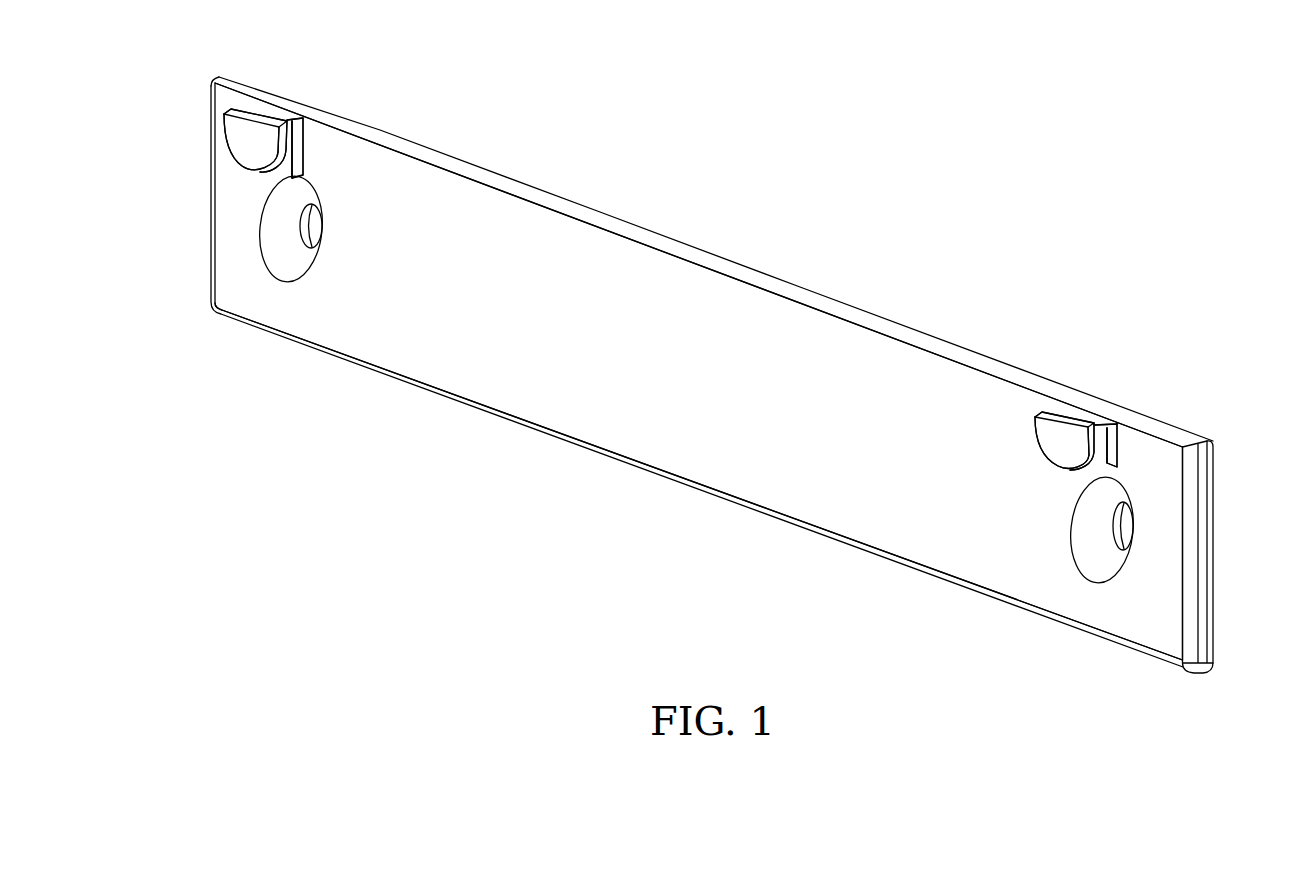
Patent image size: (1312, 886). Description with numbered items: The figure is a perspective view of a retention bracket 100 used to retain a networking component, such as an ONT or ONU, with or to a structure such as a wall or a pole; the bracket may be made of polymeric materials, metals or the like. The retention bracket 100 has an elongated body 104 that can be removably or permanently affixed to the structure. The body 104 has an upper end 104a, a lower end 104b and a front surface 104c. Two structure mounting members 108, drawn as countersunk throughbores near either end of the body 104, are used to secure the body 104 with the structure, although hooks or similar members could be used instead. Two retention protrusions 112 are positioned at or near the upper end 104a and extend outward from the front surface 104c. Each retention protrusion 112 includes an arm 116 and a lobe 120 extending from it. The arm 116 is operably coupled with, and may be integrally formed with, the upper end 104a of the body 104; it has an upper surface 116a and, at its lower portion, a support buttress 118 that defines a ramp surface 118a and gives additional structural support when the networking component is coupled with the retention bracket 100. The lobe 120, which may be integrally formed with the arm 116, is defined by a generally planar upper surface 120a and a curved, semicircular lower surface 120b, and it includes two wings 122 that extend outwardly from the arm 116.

The retention bracket 100 is at (612, 222).
The body 104 is at (513, 210).
The upper end 104a is at (204, 80).
The lower end 104b is at (200, 283).
The front surface 104c is at (583, 329).
The structure mounting member 108 is at (324, 233).
The retention protrusion 112 is at (250, 118).
The arm 116 is at (294, 128).
The upper surface 116a is at (280, 110).
The support buttress 118 is at (294, 155).
The ramp surface 118a is at (303, 165).
The lobe 120 is at (245, 146).
The upper surface 120a is at (250, 118).
The lower surface 120b is at (226, 181).
The wing 122 is at (261, 160).